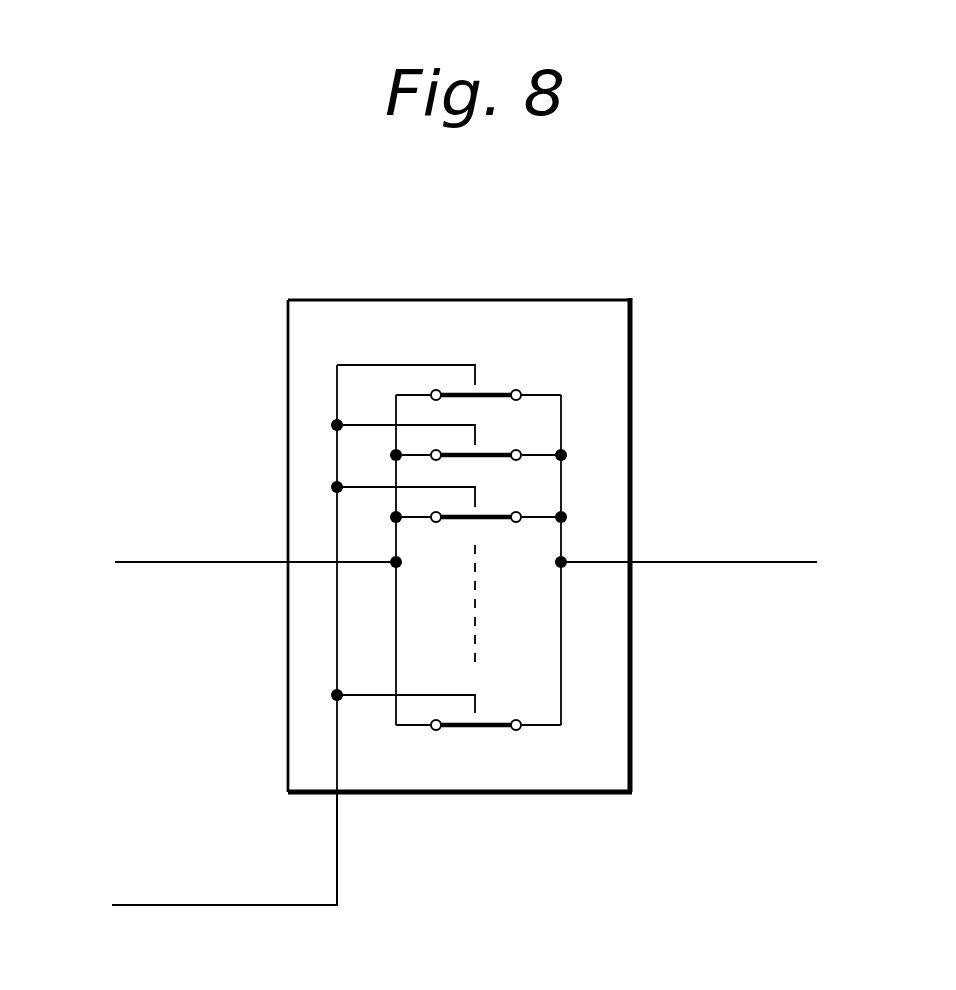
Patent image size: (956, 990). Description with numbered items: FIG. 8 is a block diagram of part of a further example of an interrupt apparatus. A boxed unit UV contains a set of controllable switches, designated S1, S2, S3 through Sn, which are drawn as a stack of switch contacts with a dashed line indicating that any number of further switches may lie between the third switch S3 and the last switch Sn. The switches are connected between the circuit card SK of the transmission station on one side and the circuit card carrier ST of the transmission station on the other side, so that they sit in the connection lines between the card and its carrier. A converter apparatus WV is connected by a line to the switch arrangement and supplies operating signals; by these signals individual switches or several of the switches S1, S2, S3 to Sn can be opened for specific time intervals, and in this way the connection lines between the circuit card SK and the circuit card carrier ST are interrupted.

The switching unit UV is at (596, 317).
The controllable switch S1 is at (493, 393).
The controllable switch S2 is at (493, 453).
The controllable switch S3 is at (493, 515).
The controllable switch Sn is at (493, 723).
The circuit card of the transmission station SK is at (233, 560).
The circuit card carrier of the transmission station ST is at (713, 567).
The converter apparatus WV is at (202, 858).